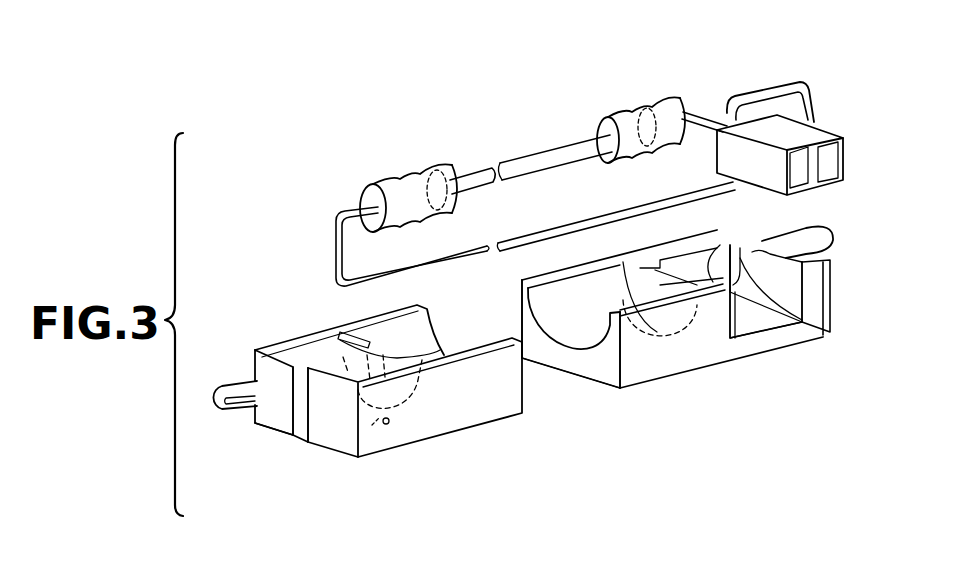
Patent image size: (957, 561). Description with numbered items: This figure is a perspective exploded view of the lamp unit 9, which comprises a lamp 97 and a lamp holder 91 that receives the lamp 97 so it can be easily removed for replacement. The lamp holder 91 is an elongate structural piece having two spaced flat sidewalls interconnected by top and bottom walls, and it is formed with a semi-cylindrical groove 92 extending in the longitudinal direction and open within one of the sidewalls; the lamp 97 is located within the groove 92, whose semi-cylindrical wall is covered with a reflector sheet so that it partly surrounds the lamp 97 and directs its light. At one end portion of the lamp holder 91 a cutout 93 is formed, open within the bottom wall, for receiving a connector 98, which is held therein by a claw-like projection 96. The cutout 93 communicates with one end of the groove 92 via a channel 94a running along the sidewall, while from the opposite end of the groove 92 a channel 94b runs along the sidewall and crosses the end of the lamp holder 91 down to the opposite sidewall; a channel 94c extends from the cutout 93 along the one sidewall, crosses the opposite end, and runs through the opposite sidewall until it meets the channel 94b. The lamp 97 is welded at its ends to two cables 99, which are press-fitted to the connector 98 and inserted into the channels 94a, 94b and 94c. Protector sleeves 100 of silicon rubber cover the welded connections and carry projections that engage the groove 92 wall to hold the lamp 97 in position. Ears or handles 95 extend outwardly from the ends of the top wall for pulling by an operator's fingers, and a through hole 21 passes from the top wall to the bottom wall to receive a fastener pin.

The lamp unit 9 is at (763, 418).
The through hole 21 is at (393, 423).
The lamp holder 91 is at (655, 363).
The semi-cylindrical groove 92 is at (582, 335).
The cutout 93 is at (757, 327).
The channel 94a is at (668, 330).
The channel 94b is at (300, 428).
The channel 94c is at (806, 328).
The ears or handles 95 is at (233, 405).
The claw-like projection 96 is at (735, 250).
The lamp 97 is at (476, 175).
The connector 98 is at (776, 128).
The cables 99 is at (335, 261).
The protector sleeves 100 is at (403, 187).